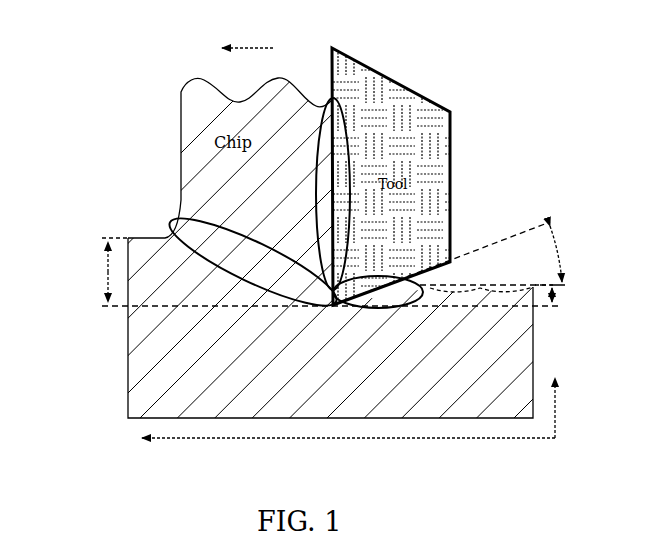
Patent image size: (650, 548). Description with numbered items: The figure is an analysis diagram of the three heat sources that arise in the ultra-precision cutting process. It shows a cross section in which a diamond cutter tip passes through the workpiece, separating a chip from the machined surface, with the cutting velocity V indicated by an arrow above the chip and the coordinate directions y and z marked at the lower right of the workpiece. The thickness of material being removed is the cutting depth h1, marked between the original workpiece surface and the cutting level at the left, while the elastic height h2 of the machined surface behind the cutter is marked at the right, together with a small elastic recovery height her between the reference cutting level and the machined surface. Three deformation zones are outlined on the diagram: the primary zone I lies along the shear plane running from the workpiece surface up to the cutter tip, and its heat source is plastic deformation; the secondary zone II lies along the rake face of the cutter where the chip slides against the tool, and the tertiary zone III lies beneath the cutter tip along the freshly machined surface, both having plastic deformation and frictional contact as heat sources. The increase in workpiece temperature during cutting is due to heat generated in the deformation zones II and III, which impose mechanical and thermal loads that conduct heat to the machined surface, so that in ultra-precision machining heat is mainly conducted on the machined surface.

The primary zone I is at (252, 261).
The secondary zone II is at (333, 194).
The tertiary zone III is at (378, 292).
The cutting velocity V is at (247, 37).
The cutting depth h1 is at (69, 272).
The elastic height h2 is at (576, 296).
The elastic recovery height her is at (563, 297).
The y axis y is at (342, 453).
The z axis z is at (565, 401).